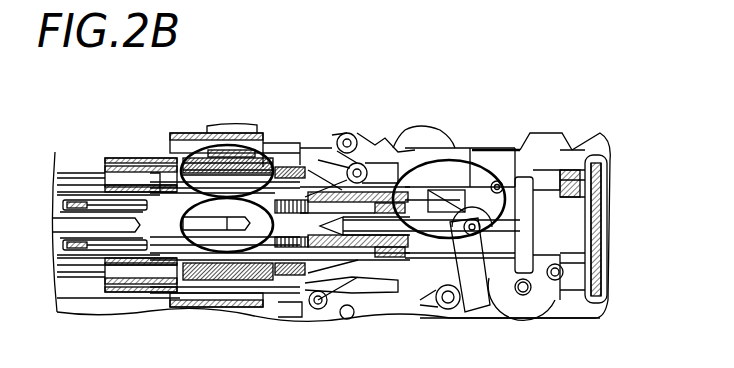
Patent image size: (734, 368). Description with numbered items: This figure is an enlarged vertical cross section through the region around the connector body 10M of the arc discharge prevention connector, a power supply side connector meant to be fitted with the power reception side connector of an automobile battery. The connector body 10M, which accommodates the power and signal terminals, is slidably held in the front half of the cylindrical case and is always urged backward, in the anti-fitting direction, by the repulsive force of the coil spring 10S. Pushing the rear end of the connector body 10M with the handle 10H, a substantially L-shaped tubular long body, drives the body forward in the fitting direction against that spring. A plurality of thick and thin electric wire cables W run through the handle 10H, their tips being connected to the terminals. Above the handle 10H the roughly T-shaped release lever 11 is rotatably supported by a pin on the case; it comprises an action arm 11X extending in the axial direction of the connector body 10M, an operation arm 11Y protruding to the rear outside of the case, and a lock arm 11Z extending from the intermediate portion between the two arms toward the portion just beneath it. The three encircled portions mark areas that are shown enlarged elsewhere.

The coil spring 10S is at (293, 140).
The connector body 10M is at (327, 135).
The electric wire cables W is at (345, 133).
The handle 10H is at (583, 152).
The release lever 11 is at (540, 150).
The action arm 11X is at (519, 175).
The operation arm 11Y is at (534, 178).
The lock arm 11Z is at (527, 241).